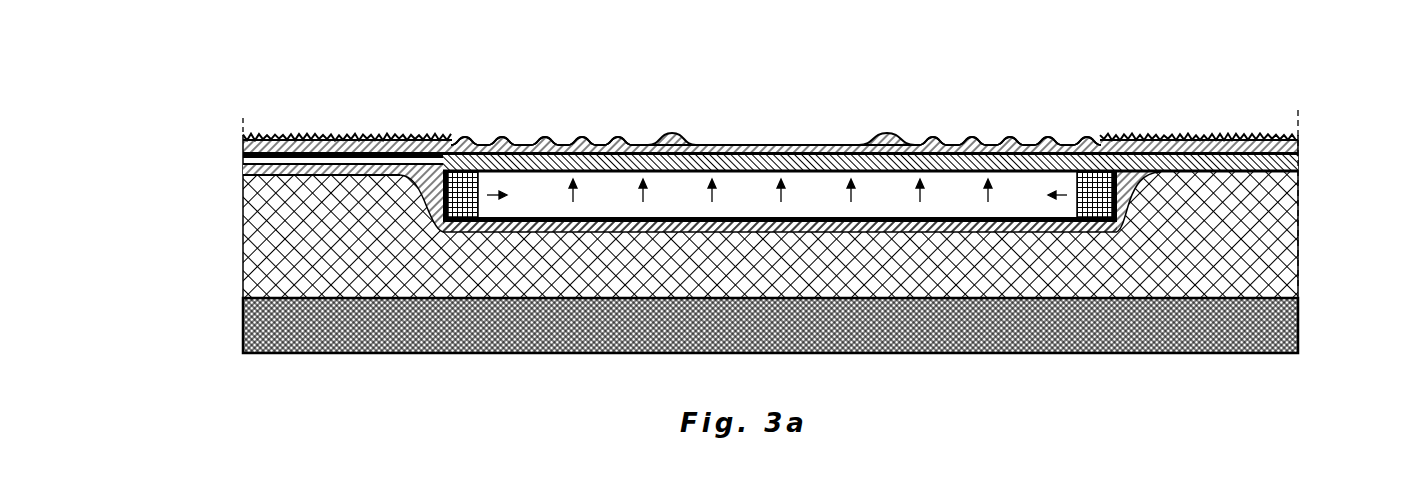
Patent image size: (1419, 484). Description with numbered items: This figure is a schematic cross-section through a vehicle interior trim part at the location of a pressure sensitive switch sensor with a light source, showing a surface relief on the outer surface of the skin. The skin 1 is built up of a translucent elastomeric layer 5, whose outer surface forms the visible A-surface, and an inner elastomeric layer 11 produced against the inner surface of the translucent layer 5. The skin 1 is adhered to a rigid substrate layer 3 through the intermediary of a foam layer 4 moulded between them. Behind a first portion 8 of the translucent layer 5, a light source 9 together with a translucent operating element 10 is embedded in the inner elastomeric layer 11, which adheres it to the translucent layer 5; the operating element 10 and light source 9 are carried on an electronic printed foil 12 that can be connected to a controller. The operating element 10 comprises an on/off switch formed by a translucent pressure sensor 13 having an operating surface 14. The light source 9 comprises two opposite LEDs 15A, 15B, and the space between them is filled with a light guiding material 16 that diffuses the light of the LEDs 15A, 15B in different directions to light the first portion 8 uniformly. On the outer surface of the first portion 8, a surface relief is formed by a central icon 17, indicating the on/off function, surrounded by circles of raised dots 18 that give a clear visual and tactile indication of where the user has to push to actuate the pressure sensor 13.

The skin 1 is at (1310, 135).
The substrate layer 3 is at (1272, 330).
The foam layer 4 is at (1268, 243).
The translucent elastomeric layer 5 is at (257, 146).
The first portion 8 is at (938, 108).
The light source 9 is at (510, 232).
The translucent operating element 10 is at (622, 153).
The inner elastomeric layer 11 is at (258, 168).
The electronic printed foil 12 is at (307, 157).
The translucent pressure sensor 13 is at (572, 153).
The operating surface 14 is at (727, 153).
The LED 15A is at (443, 222).
The LED 15B is at (1095, 200).
The light guiding material 16 is at (550, 190).
The central icon 17 is at (885, 135).
The dots 18 is at (1123, 42).